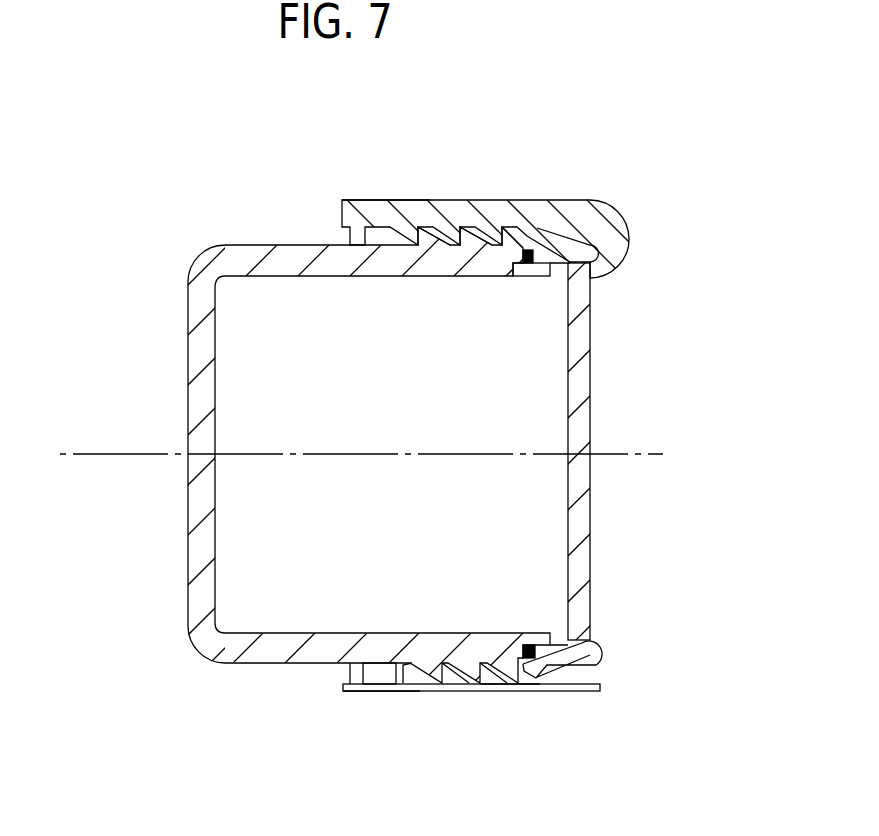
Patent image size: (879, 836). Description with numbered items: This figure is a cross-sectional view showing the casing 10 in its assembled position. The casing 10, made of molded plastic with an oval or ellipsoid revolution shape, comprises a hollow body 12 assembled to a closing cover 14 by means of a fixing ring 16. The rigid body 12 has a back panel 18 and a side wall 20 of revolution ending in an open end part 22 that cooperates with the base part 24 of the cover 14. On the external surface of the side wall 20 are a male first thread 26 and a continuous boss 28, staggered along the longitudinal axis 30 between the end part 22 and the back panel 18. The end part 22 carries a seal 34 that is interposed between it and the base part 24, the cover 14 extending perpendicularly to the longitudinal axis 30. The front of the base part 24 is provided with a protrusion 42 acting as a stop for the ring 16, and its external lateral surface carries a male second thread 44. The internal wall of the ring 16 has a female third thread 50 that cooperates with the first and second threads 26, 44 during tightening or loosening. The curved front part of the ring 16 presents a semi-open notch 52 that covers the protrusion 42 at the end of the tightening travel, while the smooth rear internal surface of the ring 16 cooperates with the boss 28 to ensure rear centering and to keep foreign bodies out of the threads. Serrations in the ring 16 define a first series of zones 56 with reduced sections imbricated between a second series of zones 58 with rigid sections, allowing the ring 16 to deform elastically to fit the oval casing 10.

The casing 10 is at (434, 186).
The hollow body 12 is at (245, 667).
The closing cover 14 is at (583, 355).
The fixing ring 16 is at (588, 193).
The back panel 18 is at (200, 507).
The side wall 20 is at (290, 262).
The end part 22 is at (540, 270).
The base part 24 is at (595, 690).
The male first thread 26 is at (397, 668).
The continuous boss 28 is at (358, 667).
The longitudinal axis 30 is at (622, 458).
The seal 34 is at (533, 664).
The protrusion 42 is at (604, 660).
The male second thread 44 is at (511, 692).
The female third thread 50 is at (440, 233).
The semi-open notch 52 is at (604, 266).
The zones with reduced sections 56 is at (380, 692).
The zones with rigid sections 58 is at (386, 204).